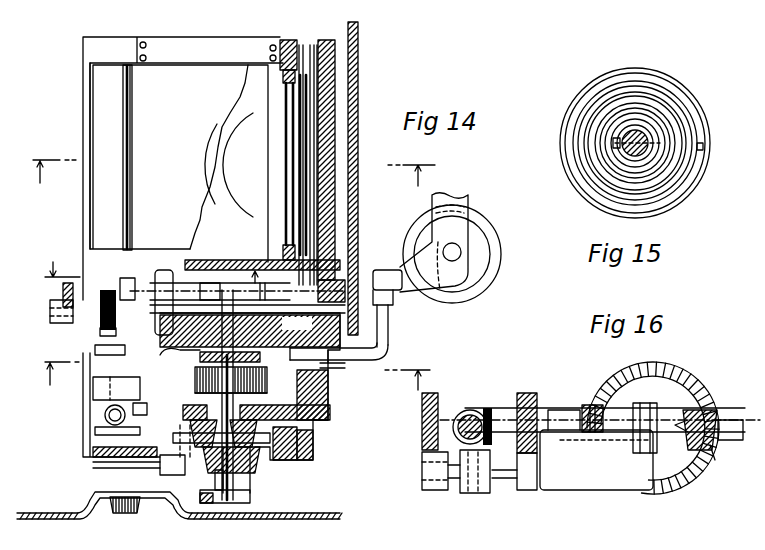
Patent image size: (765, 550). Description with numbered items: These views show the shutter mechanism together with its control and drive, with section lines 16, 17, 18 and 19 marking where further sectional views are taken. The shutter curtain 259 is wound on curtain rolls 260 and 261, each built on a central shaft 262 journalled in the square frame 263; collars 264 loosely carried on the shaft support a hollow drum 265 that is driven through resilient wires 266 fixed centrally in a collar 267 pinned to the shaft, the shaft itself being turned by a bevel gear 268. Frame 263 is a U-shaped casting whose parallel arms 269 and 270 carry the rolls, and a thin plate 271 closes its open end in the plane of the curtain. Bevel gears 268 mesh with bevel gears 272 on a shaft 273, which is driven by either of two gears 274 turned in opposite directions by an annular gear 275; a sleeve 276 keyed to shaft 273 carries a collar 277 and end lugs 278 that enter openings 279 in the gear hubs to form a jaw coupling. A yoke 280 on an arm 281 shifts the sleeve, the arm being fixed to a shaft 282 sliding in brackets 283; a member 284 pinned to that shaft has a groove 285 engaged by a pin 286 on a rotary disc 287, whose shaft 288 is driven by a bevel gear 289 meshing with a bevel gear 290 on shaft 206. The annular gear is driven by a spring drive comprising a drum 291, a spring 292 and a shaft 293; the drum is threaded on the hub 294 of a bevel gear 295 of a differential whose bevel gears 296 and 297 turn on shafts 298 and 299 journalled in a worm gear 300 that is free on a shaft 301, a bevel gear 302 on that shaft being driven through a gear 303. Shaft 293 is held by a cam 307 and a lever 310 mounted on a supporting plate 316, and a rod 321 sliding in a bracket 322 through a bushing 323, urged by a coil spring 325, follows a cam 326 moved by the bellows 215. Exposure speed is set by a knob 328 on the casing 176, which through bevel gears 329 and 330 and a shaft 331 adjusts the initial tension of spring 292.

In FIG. 14, the section line 16 is at (152, 279).
In FIG. 14, the section line 17 is at (233, 376).
In FIG. 14, the section line 18 is at (229, 432).
In FIG. 14, the section line 19 is at (228, 174).
In FIG. 14, the cone casing 176 is at (205, 520).
In FIG. 14, the shaft 206 is at (128, 418).
In FIG. 14, the bellows 215 is at (450, 290).
In FIG. 14, the shutter curtain 259 is at (192, 184).
In FIG. 14, the curtain roll 260 is at (134, 130).
In FIG. 14, the curtain roll 261 is at (283, 99).
In FIG. 14, the central shaft 262 is at (330, 102).
In FIG. 16, the central shaft 262 is at (472, 412).
In FIG. 14, the frame 263 is at (83, 230).
In FIG. 14, the collars 264 is at (322, 78).
In FIG. 14, the hollow cylindrical drum 265 is at (322, 143).
In FIG. 14, the wires 266 is at (283, 222).
In FIG. 14, the collar 267 is at (322, 166).
In FIG. 14, the bevel gear 268 is at (340, 280).
In FIG. 16, the bevel gear 268 is at (466, 412).
In FIG. 14, the arm 269 is at (90, 115).
In FIG. 14, the arm 270 is at (340, 115).
In FIG. 14, the thin plate 271 is at (196, 45).
In FIG. 14, the bevel gears 272 is at (130, 278).
In FIG. 16, the bevel gears 272 is at (488, 408).
In FIG. 14, the shaft 273 is at (172, 280).
In FIG. 16, the shaft 273 is at (548, 412).
In FIG. 14, the gears 274 is at (270, 280).
In FIG. 16, the gears 274 is at (590, 403).
In FIG. 14, the annular gear 275 is at (247, 318).
In FIG. 16, the annular gear 275 is at (684, 370).
In FIG. 14, the sleeve 276 is at (233, 287).
In FIG. 16, the sleeve 276 is at (715, 400).
In FIG. 16, the collar 277 is at (660, 385).
In FIG. 16, the lugs 278 is at (620, 440).
In FIG. 16, the openings 279 is at (720, 448).
In FIG. 14, the yoke 280 is at (230, 287).
In FIG. 16, the yoke 280 is at (625, 378).
In FIG. 14, the arm 281 is at (165, 320).
In FIG. 16, the arm 281 is at (610, 490).
In FIG. 14, the shaft 282 is at (97, 303).
In FIG. 16, the shaft 282 is at (507, 492).
In FIG. 16, the brackets 283 is at (425, 490).
In FIG. 14, the member 284 is at (60, 318).
In FIG. 16, the member 284 is at (462, 500).
In FIG. 16, the groove 285 is at (466, 512).
In FIG. 14, the pin 286 is at (100, 334).
In FIG. 16, the pin 286 is at (488, 493).
In FIG. 14, the rotary disc 287 is at (100, 350).
In FIG. 16, the rotary disc 287 is at (422, 470).
In FIG. 14, the shaft 288 is at (93, 388).
In FIG. 14, the bevel gear 289 is at (95, 431).
In FIG. 14, the bevel gear 290 is at (105, 413).
In FIG. 14, the drum 291 is at (262, 397).
In FIG. 15, the drum 291 is at (693, 186).
In FIG. 14, the spring 292 is at (197, 388).
In FIG. 15, the spring 292 is at (687, 140).
In FIG. 14, the shaft 293 is at (200, 372).
In FIG. 15, the shaft 293 is at (613, 147).
In FIG. 14, the hub 294 is at (255, 405).
In FIG. 14, the bevel gear 295 is at (192, 418).
In FIG. 14, the bevel gear 296 is at (208, 473).
In FIG. 14, the bevel gear 297 is at (245, 470).
In FIG. 14, the shaft 298 is at (180, 433).
In FIG. 14, the shaft 299 is at (298, 438).
In FIG. 14, the worm gear 300 is at (290, 455).
In FIG. 14, the shaft 301 is at (250, 500).
In FIG. 14, the bevel gear 302 is at (245, 485).
In FIG. 14, the gear 303 is at (205, 500).
In FIG. 14, the cam 307 is at (200, 357).
In FIG. 14, the lever 310 is at (175, 362).
In FIG. 14, the supporting plate 316 is at (392, 350).
In FIG. 14, the rod 321 is at (345, 360).
In FIG. 14, the bracket 322 is at (330, 412).
In FIG. 14, the bushing 323 is at (330, 375).
In FIG. 14, the coil spring 325 is at (330, 392).
In FIG. 14, the cam 326 is at (393, 300).
In FIG. 14, the knob 328 is at (125, 518).
In FIG. 14, the bevel gear 329 is at (93, 452).
In FIG. 14, the bevel gear 330 is at (158, 455).
In FIG. 14, the shaft 331 is at (174, 465).